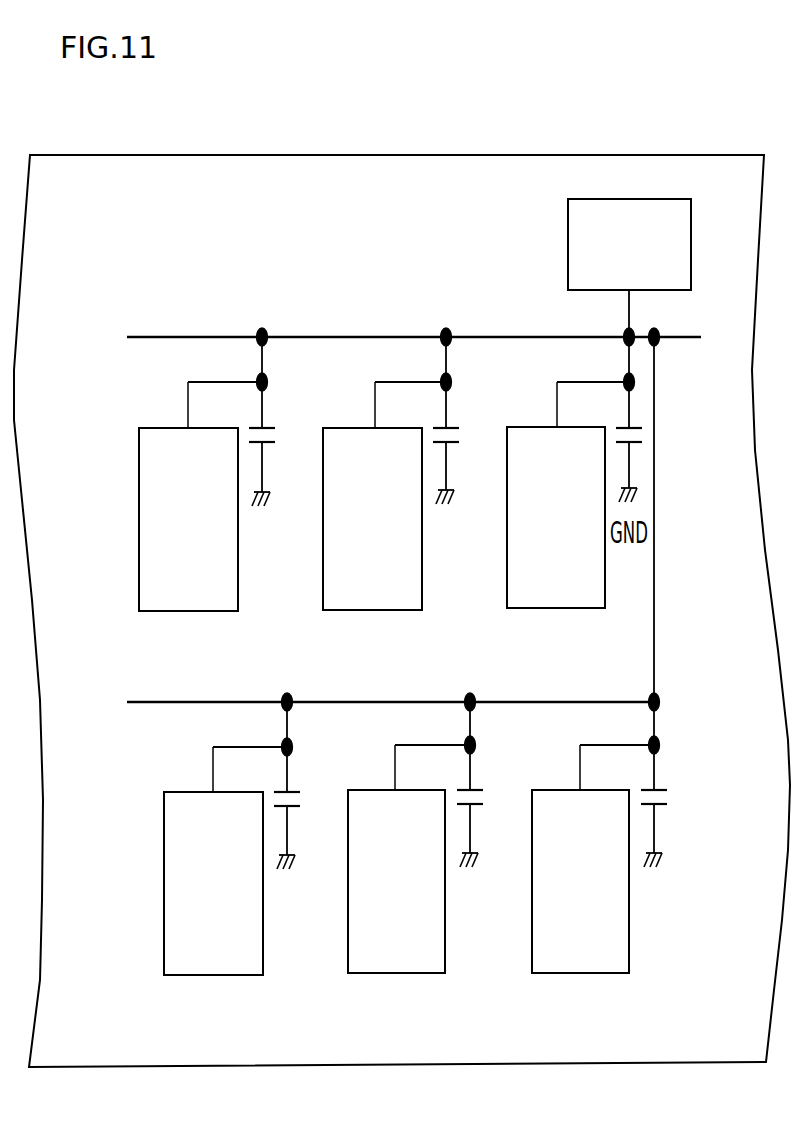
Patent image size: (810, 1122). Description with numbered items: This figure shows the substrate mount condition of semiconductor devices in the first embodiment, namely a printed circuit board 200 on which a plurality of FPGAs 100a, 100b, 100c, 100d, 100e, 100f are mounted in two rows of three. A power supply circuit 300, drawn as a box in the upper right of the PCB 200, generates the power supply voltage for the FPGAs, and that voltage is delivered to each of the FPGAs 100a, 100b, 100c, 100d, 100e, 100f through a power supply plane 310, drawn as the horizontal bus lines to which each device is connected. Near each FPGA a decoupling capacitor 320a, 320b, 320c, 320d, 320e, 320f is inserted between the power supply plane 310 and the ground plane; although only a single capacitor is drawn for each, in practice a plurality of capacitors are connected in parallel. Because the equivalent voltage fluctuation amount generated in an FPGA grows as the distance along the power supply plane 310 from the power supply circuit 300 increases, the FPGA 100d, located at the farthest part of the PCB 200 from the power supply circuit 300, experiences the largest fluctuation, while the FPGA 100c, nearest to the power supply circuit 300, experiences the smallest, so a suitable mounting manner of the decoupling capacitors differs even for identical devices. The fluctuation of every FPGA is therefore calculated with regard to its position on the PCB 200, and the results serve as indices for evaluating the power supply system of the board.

The printed circuit board 200 is at (594, 155).
The power supply circuit 300 is at (650, 199).
The power supply plane 310 is at (680, 337).
The decoupling capacitor 320a is at (277, 432).
The decoupling capacitor 320b is at (460, 432).
The decoupling capacitor 320c is at (642, 432).
The decoupling capacitor 320d is at (300, 797).
The decoupling capacitor 320e is at (484, 797).
The decoupling capacitor 320f is at (668, 797).
The FPGA 100a is at (139, 579).
The FPGA 100b is at (323, 577).
The FPGA 100c is at (507, 577).
The FPGA 100d is at (164, 935).
The FPGA 100e is at (348, 933).
The FPGA 100f is at (532, 933).